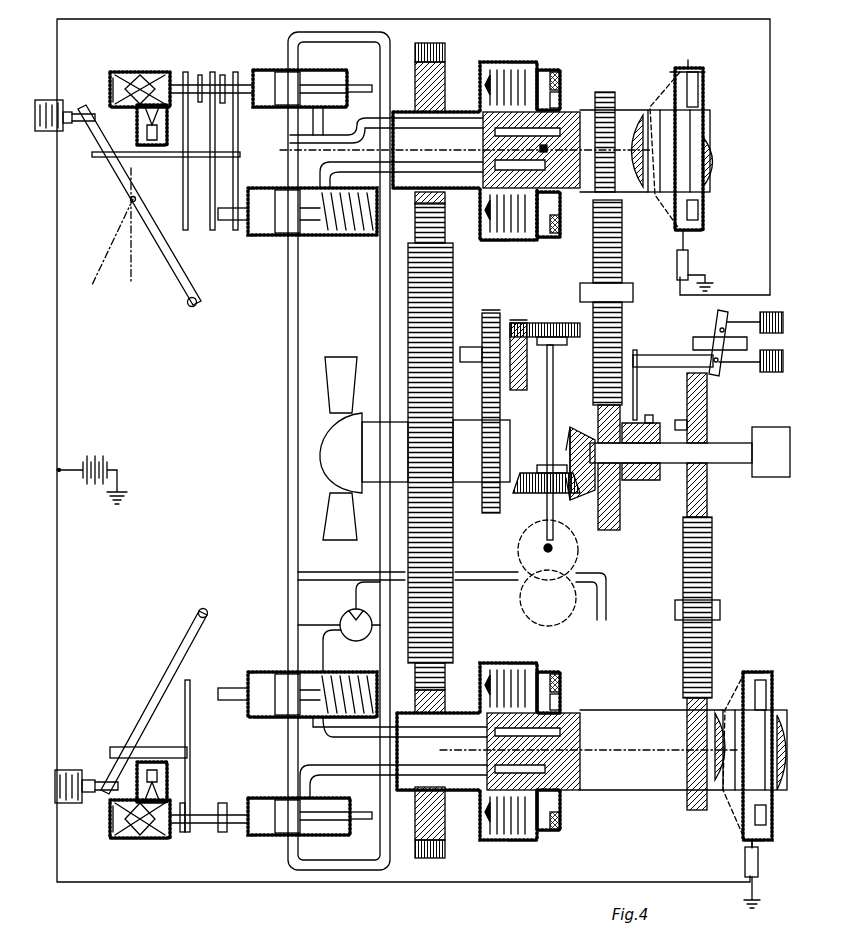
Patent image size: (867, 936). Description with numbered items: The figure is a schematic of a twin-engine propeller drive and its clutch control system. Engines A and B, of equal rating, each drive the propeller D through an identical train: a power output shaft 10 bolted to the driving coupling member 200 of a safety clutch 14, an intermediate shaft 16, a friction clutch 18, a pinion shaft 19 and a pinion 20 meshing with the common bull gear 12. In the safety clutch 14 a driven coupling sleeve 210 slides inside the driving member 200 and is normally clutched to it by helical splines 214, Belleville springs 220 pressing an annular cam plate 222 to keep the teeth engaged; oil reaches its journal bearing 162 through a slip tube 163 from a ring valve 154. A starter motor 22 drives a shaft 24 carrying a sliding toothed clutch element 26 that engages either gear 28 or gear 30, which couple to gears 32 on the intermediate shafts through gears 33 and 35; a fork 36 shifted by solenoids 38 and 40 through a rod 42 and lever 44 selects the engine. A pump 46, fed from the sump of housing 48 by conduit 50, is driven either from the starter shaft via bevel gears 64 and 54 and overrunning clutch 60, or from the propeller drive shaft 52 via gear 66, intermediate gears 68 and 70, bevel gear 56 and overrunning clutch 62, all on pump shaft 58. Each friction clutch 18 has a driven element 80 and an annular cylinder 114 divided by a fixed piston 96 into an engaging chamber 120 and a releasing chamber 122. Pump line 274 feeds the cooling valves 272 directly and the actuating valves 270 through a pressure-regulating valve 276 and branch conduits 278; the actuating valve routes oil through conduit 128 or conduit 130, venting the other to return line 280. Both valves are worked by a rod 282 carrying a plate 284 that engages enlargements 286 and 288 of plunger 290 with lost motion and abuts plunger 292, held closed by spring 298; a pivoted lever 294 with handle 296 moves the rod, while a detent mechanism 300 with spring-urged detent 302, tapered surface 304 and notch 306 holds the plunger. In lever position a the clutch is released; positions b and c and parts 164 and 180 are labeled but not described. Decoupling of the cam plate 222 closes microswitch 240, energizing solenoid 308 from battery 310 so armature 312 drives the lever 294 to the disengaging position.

The power output shaft 10 is at (710, 135).
The propeller bull gear 12 is at (455, 552).
The safety clutch 14 is at (700, 68).
The intermediate shaft 16 is at (630, 185).
The friction clutch 18 is at (505, 60).
The pinion shaft 19 is at (447, 108).
The pinion 20 is at (445, 52).
The starter motor 22 is at (783, 477).
The starter shaft 24 is at (743, 463).
The sliding toothed clutch element 26 is at (645, 425).
The gear 28 is at (707, 415).
The gear 30 is at (620, 505).
The gear on intermediate shaft 32 is at (612, 96).
The gear 33 is at (622, 238).
The gear 35 is at (697, 610).
The sliding fork 36 is at (638, 410).
The solenoid 38 is at (772, 372).
The solenoid 40 is at (772, 312).
The rod 42 is at (648, 355).
The lever 44 is at (716, 322).
The pump 46 is at (580, 565).
The transmission housing 48 is at (517, 322).
The conduit 50 is at (606, 600).
The propeller drive shaft 52 is at (468, 430).
The bevel gear 54 is at (546, 500).
The bevel gear 56 is at (545, 323).
The pump shaft 58 is at (560, 492).
The overrunning clutch 60 is at (542, 468).
The overrunning clutch 62 is at (555, 345).
The bevel gear 64 is at (578, 427).
The gear 66 is at (490, 513).
The intermediate gear 68 is at (488, 312).
The intermediate gear 70 is at (518, 388).
The driven clutch element 80 is at (497, 242).
The fixed piston 96 is at (524, 240).
The annular cylinder 114 is at (552, 240).
The front chamber 120 is at (548, 70).
The rear chamber 122 is at (562, 98).
The disengaging oil tube 128 is at (290, 140).
The engaging oil tube 130 is at (345, 168).
The ring valve 154 is at (487, 148).
The safety clutch journal bearing 162 is at (718, 165).
The slip tube 163 is at (633, 120).
The fluid line 164 is at (300, 162).
The spring 180 is at (562, 78).
The safety clutch driving coupling member 200 is at (705, 78).
The driven coupling sleeve 210 is at (700, 210).
The helical splines 214 is at (700, 72).
The Belleville springs 220 is at (668, 85).
The annular cam plate 222 is at (688, 62).
The microswitch 240 is at (690, 262).
The friction clutch actuating valve 270 is at (266, 70).
The friction clutch cooling valve 272 is at (272, 237).
The conduit 274 is at (490, 582).
The pressure-regulating valve 276 is at (350, 640).
The branch conduit 278 is at (388, 300).
The return line 280 is at (357, 85).
The rod 282 is at (95, 158).
The plate 284 is at (188, 230).
The enlargement 286 is at (186, 72).
The enlargement 288 is at (213, 72).
The plunger shaft 290 is at (278, 107).
The plunger 292 is at (235, 222).
The pivoted lever 294 is at (118, 197).
The handle 296 is at (190, 307).
The spring 298 is at (345, 237).
The detent mechanism 300 is at (122, 72).
The spring-urged detent 302 is at (160, 145).
The tapered surface 304 is at (112, 88).
The notch 306 is at (142, 75).
The solenoid 308 is at (45, 100).
The battery 310 is at (98, 455).
The solenoid armature 312 is at (78, 125).
The engine A is at (718, 155).
The engine B is at (787, 755).
The propeller D is at (288, 548).
The lever position a is at (188, 72).
The position b is at (236, 72).
The position c is at (211, 72).